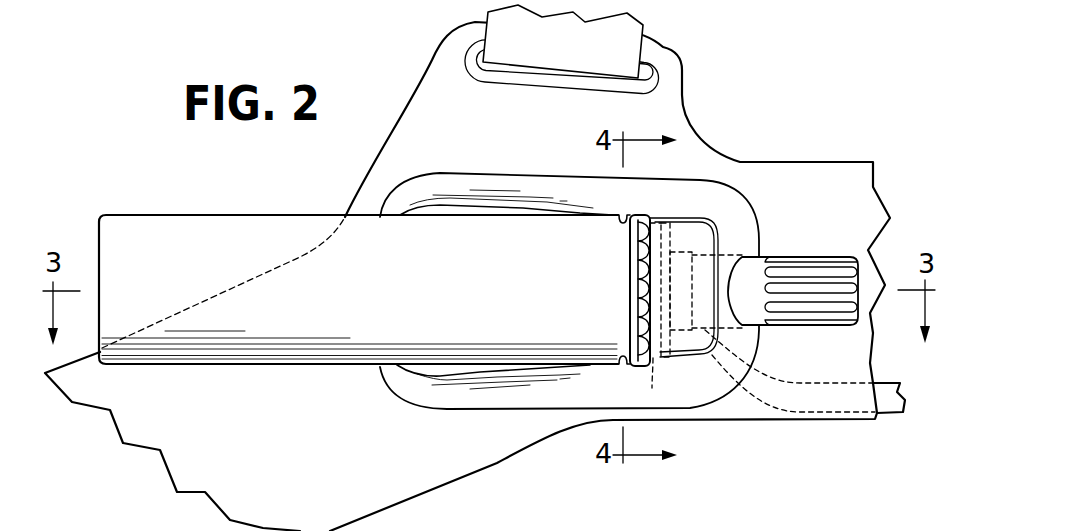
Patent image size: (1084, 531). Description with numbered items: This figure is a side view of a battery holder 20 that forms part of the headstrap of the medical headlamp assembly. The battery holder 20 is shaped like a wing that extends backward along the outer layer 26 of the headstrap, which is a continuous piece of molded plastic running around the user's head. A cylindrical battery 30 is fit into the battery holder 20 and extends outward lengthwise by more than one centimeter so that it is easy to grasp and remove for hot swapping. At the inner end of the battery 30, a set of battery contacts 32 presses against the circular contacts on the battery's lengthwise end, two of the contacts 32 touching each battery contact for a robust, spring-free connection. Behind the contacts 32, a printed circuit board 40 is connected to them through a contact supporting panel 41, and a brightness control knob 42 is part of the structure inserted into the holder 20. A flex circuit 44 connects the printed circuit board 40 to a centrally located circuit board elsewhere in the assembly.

The battery holder 20 is at (540, 183).
The outer layer 26 is at (828, 178).
The battery 30 is at (236, 215).
The battery contacts 32 is at (638, 260).
The printed circuit board 40 is at (678, 238).
The contact supporting panel 41 is at (650, 388).
The brightness control knob 42 is at (797, 255).
The flex circuit 44 is at (888, 417).